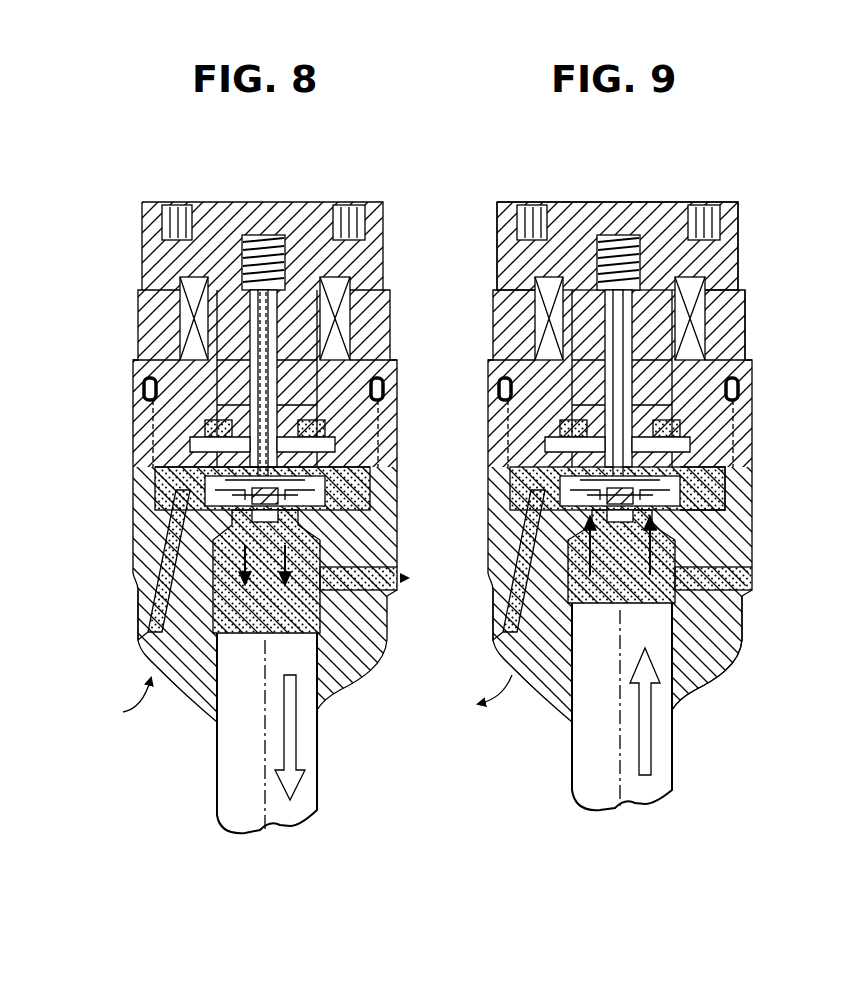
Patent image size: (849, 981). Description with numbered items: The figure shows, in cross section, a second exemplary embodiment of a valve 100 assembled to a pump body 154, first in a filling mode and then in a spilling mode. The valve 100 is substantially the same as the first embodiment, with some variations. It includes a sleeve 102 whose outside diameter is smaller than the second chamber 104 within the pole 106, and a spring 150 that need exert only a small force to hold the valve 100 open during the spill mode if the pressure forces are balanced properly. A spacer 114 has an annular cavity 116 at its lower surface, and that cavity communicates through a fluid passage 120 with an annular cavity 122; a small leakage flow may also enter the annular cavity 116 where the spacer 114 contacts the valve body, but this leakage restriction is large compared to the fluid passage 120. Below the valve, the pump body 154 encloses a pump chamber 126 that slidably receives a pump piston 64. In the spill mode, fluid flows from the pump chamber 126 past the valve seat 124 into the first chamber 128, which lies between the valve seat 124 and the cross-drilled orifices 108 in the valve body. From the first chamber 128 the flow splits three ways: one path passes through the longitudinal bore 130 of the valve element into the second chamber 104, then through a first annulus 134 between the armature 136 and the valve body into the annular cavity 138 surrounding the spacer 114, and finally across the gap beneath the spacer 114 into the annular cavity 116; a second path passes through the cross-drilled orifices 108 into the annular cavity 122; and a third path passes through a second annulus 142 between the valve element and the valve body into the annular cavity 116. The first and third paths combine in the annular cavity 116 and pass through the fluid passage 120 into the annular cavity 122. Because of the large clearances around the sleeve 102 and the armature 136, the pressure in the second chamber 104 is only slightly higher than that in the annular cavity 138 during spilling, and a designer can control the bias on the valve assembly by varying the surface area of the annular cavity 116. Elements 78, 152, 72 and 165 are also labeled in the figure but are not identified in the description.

In FIG. 8, the valve 100 is at (128, 186).
In FIG. 8, the sleeve 102 is at (178, 340).
In FIG. 8, the second chamber 104 is at (250, 225).
In FIG. 9, the second chamber 104 is at (616, 232).
In FIG. 8, the pole 106 is at (287, 203).
In FIG. 8, the spacer 114 is at (210, 428).
In FIG. 8, the fluid passage 120 is at (312, 436).
In FIG. 9, the fluid passage 120 is at (740, 445).
In FIG. 8, the annular cavity 122 is at (371, 488).
In FIG. 9, the annular cavity 122 is at (730, 510).
In FIG. 8, the diaphragm 78 is at (192, 464).
In FIG. 8, the passage wall 152 is at (142, 606).
In FIG. 8, the pump body 154 is at (152, 640).
In FIG. 9, the pump body 154 is at (560, 690).
In FIG. 8, the pump piston 64 is at (217, 758).
In FIG. 9, the annular cavity 138 is at (600, 300).
In FIG. 9, the spring 150 is at (657, 290).
In FIG. 9, the longitudinal bore 130 is at (728, 202).
In FIG. 9, the fastener 165 is at (742, 260).
In FIG. 9, the coil winding 72 is at (745, 306).
In FIG. 9, the armature 136 is at (742, 340).
In FIG. 9, the first annulus 134 is at (746, 378).
In FIG. 9, the annular cavity 116 is at (690, 442).
In FIG. 9, the cross-drilled orifices 108 is at (728, 480).
In FIG. 9, the valve seat 124 is at (738, 590).
In FIG. 9, the pump chamber 126 is at (685, 645).
In FIG. 9, the second annulus 142 is at (505, 368).
In FIG. 9, the first chamber 128 is at (530, 520).